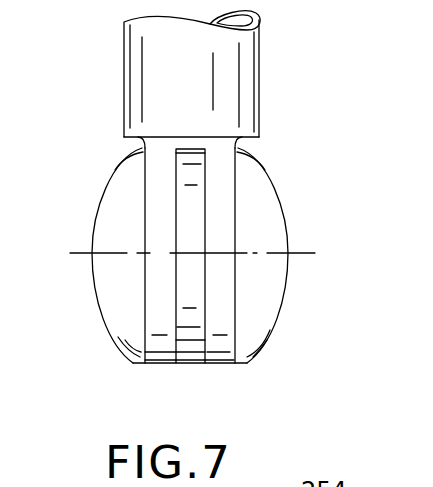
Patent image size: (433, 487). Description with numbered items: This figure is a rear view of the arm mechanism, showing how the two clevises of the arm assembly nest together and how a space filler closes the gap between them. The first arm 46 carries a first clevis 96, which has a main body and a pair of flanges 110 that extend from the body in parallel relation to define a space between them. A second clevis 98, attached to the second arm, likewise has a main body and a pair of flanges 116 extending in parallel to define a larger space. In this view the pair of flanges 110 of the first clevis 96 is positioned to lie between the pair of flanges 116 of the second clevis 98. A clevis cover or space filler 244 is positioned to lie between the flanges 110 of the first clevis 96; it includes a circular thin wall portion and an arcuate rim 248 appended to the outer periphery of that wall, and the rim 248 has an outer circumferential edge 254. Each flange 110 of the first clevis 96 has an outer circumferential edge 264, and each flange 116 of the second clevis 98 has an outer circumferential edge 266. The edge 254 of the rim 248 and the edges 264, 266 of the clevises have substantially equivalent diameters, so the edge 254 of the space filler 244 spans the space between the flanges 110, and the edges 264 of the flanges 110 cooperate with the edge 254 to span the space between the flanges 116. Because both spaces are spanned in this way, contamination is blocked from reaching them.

The first arm 46 is at (252, 52).
The second clevis 98 is at (100, 163).
The flanges of second clevis 116 is at (117, 199).
The flanges of first clevis 110 is at (156, 231).
The arcuate rim 248 is at (182, 276).
The outer circumferential edge of flange of second clevis 266 is at (106, 352).
The first clevis 96 is at (137, 369).
The outer circumferential edge of flange of first clevis 264 is at (155, 365).
The space filler 244 is at (174, 372).
The outer circumferential edge of rim 254 is at (188, 365).